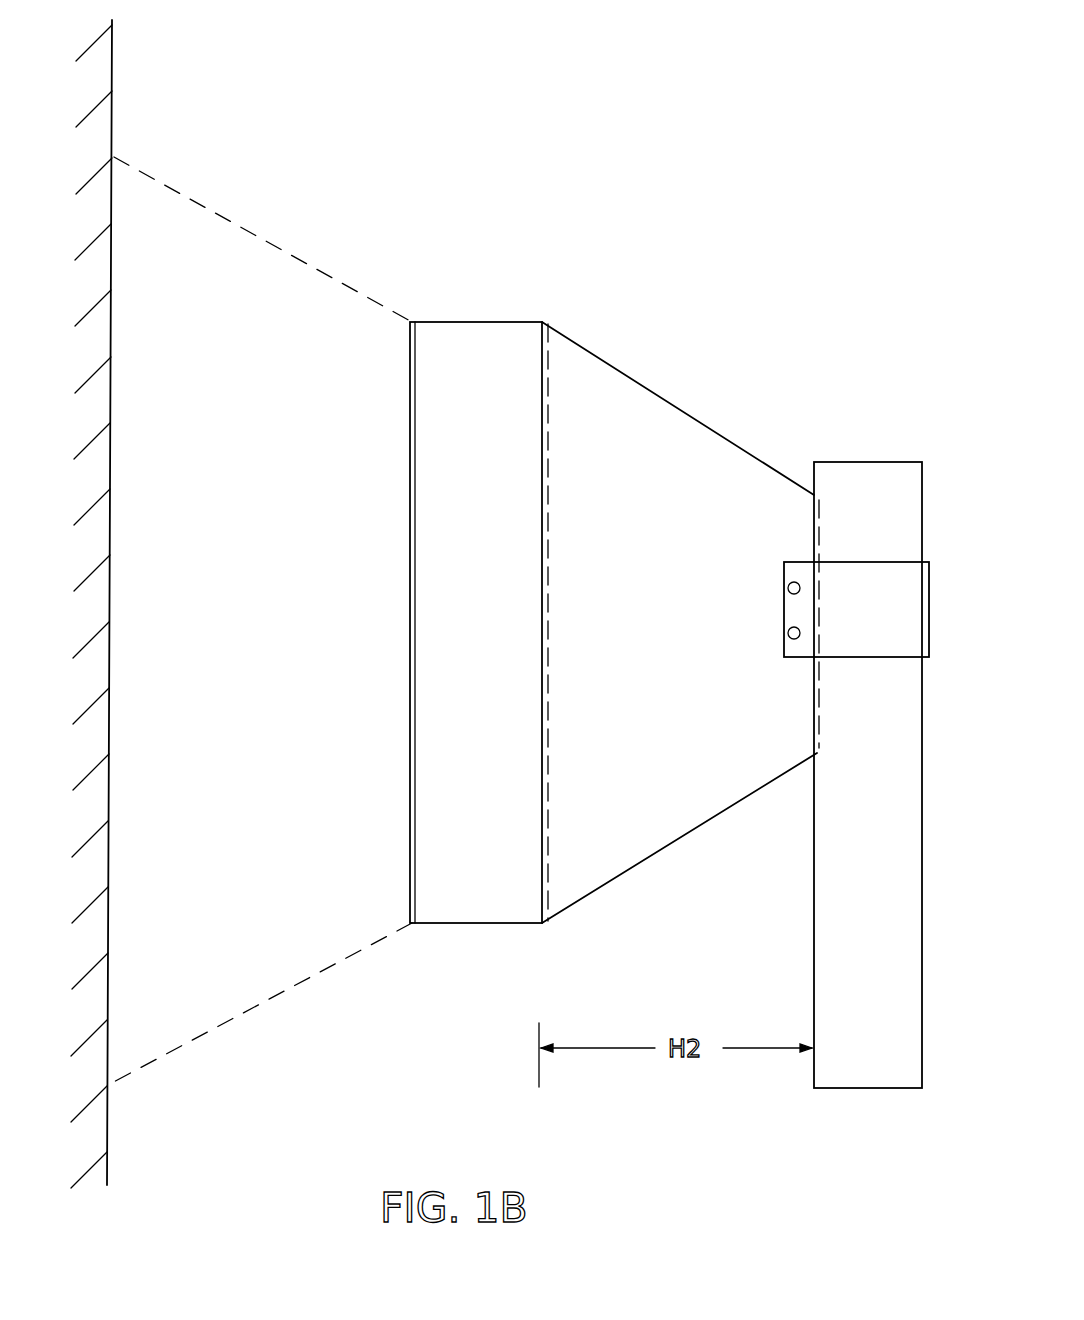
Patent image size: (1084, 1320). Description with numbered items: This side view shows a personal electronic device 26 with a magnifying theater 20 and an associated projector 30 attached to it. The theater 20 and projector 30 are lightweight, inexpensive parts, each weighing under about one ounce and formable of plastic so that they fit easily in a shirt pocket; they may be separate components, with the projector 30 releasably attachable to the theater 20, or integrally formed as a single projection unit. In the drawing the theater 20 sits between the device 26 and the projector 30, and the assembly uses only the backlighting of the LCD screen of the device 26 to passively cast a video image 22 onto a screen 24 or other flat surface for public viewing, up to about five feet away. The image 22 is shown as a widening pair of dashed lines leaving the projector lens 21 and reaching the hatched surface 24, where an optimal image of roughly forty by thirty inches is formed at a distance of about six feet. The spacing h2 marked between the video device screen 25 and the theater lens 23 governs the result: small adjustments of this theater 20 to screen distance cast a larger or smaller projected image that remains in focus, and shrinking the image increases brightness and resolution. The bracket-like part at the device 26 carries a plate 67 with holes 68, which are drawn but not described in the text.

The theater 20 is at (622, 372).
The projector lens 21 is at (412, 532).
The image 22 is at (210, 210).
The theater lens 23 is at (549, 543).
The screen 24 is at (110, 605).
The video device screen 25 is at (819, 545).
The personal electronic device 26 is at (899, 460).
The projector 30 is at (453, 320).
The mounting bracket 67 is at (878, 633).
The mounting holes 68 is at (786, 641).